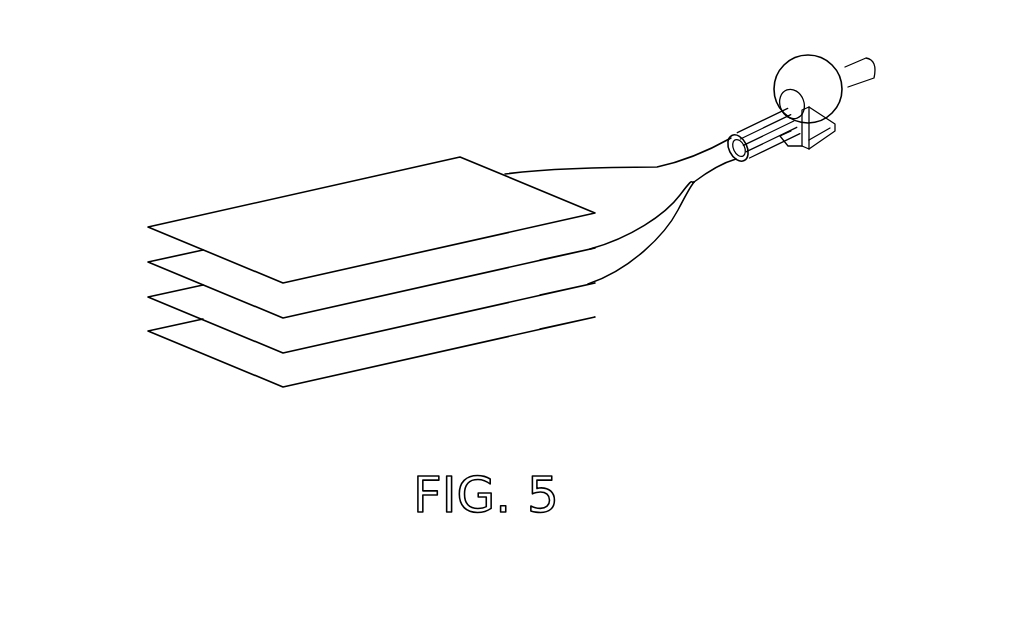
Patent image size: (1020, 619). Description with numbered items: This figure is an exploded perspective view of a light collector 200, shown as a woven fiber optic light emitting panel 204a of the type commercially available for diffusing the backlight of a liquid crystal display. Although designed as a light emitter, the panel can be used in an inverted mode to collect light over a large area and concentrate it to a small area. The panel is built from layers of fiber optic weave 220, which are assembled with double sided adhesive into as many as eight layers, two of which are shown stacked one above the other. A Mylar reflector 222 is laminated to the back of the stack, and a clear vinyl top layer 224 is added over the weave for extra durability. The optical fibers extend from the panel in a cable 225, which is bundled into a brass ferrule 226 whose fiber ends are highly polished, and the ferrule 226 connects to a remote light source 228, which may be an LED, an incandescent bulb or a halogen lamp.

The light collector 200 is at (277, 412).
The woven fiber optic light emitting panel 204a is at (355, 177).
The clear vinyl top layer 224 is at (167, 227).
The layers of fiber optic weave 220 is at (170, 261).
The Mylar reflector 222 is at (178, 333).
The cable 225 is at (723, 136).
The brass ferrule 226 is at (785, 143).
The light source 228 is at (791, 56).